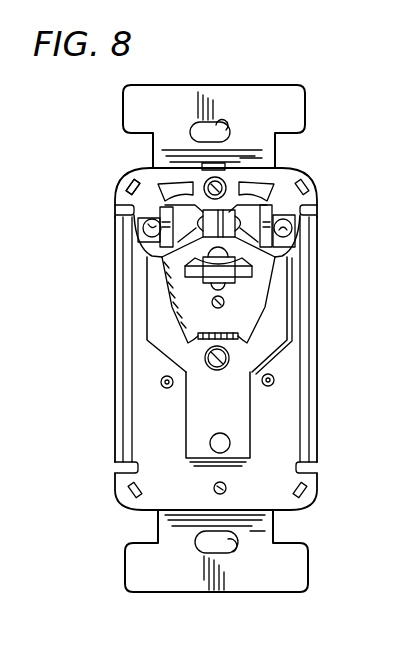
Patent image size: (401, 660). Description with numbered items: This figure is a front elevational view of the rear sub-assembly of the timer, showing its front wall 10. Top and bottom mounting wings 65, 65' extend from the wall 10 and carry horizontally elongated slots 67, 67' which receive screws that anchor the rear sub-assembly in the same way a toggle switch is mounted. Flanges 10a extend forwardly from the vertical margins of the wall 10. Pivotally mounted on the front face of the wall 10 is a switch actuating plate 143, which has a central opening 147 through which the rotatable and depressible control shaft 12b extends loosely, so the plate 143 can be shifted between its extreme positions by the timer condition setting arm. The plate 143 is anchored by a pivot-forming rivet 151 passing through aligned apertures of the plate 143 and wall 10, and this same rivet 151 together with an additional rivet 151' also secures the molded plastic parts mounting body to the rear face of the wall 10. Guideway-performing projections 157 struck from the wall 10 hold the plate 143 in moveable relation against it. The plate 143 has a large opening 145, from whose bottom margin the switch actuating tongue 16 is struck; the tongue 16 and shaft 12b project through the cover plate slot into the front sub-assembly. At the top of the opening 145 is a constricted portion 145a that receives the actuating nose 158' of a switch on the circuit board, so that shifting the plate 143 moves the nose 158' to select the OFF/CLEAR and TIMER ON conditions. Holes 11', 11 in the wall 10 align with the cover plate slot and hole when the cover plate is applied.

The top mounting wing 65 is at (234, 127).
The horizontally elongated slot 67 is at (234, 102).
The constricted portion 145a is at (314, 198).
The actuating nose 158' is at (92, 192).
The front wall 10 is at (140, 358).
The flange 10a is at (118, 418).
The central opening 147 is at (220, 375).
The pivotable switch actuating plate 143 is at (158, 288).
The large opening 145 is at (256, 282).
The guideway-performing projection 157 is at (147, 260).
The hole 11' is at (149, 312).
The switch actuating tongue 16 is at (228, 333).
The control shaft 12b is at (219, 366).
The rivet 151' is at (316, 374).
The pivot-forming rivet 151 is at (276, 419).
The hole 11 is at (240, 463).
The bottom mounting wing 65' is at (188, 551).
The horizontally elongated slot 67' is at (213, 580).